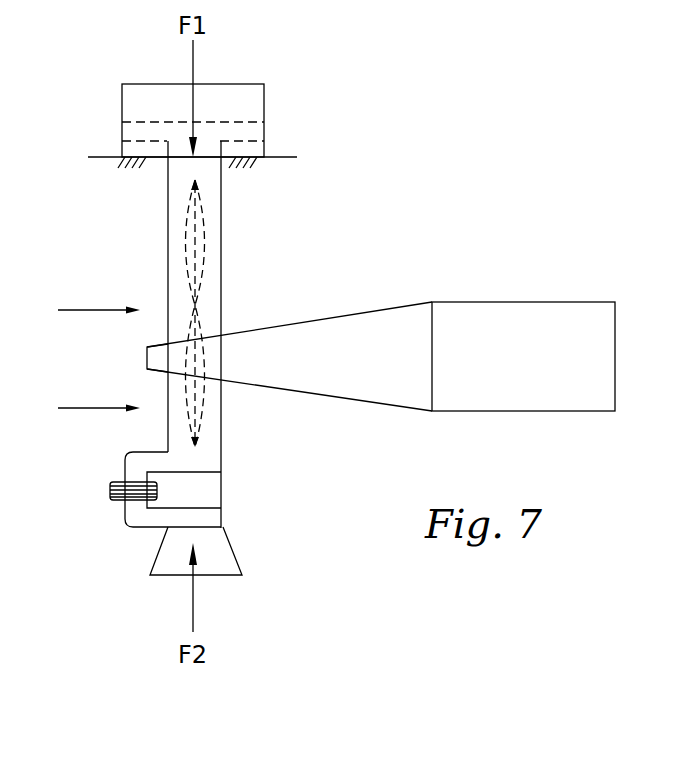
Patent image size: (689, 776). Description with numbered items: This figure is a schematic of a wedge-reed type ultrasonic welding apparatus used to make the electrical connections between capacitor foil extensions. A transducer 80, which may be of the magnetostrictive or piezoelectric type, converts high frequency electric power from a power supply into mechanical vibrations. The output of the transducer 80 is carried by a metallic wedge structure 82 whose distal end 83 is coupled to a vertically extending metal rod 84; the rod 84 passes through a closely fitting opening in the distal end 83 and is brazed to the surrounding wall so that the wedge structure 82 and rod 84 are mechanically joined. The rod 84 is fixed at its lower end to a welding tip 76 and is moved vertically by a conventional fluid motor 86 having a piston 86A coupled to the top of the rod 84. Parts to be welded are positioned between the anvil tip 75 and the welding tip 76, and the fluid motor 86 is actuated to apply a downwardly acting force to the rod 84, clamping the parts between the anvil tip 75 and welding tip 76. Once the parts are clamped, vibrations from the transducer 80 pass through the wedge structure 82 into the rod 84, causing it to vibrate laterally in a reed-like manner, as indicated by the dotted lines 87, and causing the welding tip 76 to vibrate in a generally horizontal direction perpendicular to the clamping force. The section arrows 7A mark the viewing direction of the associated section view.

The section view direction arrows 7A is at (82, 359).
The anvil tip 75 is at (143, 527).
The welding tip 76 is at (122, 452).
The transducer 80 is at (527, 318).
The wedge structure 82 is at (330, 335).
The distal end 83 is at (147, 357).
The rod 84 is at (168, 278).
The fluid motor 86 is at (132, 111).
The piston 86A is at (238, 122).
The dotted lines 87 is at (209, 273).